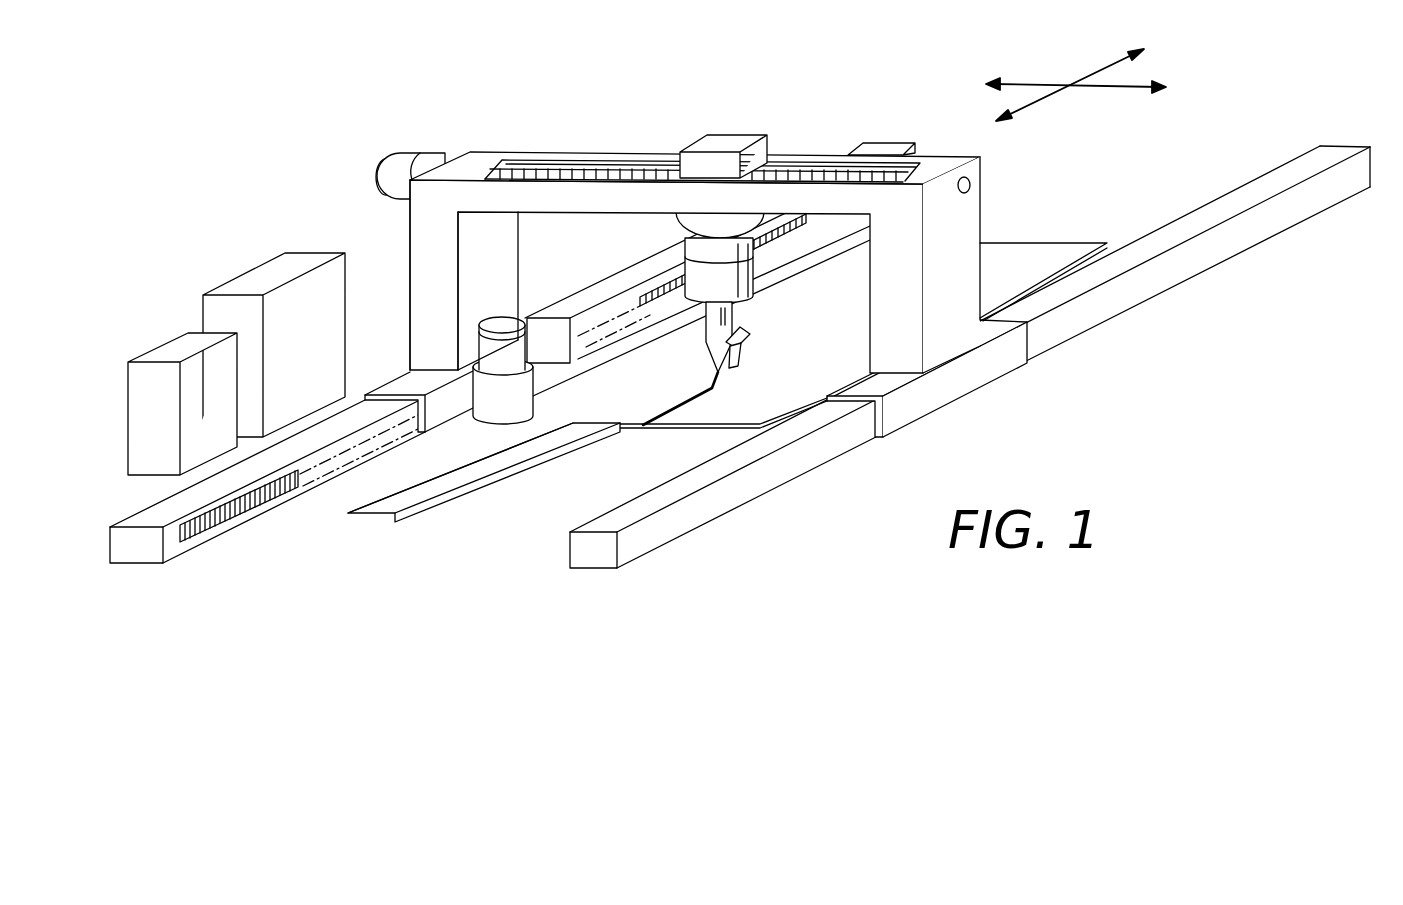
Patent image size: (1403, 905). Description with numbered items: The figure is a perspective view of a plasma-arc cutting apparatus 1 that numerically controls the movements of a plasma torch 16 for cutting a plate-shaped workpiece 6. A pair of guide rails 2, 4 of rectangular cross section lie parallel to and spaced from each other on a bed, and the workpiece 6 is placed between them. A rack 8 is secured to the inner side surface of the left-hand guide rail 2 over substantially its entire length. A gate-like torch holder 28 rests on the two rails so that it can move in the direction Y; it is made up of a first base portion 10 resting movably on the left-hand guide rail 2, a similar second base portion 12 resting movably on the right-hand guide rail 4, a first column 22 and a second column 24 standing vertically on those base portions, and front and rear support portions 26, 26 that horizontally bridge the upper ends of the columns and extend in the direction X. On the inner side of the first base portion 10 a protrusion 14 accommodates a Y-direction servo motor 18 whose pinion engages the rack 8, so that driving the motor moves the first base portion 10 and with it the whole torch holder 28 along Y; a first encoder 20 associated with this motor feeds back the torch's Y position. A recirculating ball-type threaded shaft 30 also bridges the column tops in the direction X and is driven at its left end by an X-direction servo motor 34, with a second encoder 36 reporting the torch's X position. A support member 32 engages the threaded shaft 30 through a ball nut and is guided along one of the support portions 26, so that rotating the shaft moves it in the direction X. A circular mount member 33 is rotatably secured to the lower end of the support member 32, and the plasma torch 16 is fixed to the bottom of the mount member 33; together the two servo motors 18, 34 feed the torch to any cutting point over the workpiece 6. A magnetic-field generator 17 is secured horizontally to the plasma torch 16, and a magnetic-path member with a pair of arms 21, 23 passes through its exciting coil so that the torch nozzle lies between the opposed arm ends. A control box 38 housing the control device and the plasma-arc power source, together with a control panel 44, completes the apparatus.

The plasma-arc cutting apparatus 1 is at (808, 46).
The left-hand guide rail 2 is at (141, 560).
The right-hand guide rail 4 is at (1149, 292).
The workpiece 6 is at (553, 441).
The rack 8 is at (281, 496).
The first base portion 10 is at (395, 384).
The second base portion 12 is at (985, 378).
The protrusion 14 is at (512, 420).
The plasma torch 16 is at (750, 309).
The magnetic-field generator 17 is at (749, 331).
The Y-direction servo motor 18 is at (508, 365).
The first encoder 20 is at (496, 315).
The arm of magnetic-path member 21 is at (706, 343).
The first column 22 is at (408, 250).
The arm of magnetic-path member 23 is at (739, 355).
The second column 24 is at (982, 214).
The support portions 26 is at (497, 166).
The torch holder 28 is at (704, 228).
The recirculating ball-type threaded shaft 30 is at (591, 170).
The support member 32 is at (726, 142).
The mount member 33 is at (740, 276).
The X-direction servo motor 34 is at (425, 155).
The second encoder 36 is at (376, 174).
The control box 38 is at (264, 270).
The control panel 44 is at (164, 348).